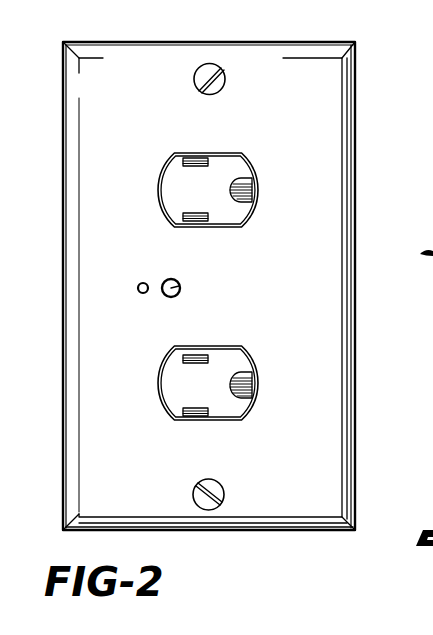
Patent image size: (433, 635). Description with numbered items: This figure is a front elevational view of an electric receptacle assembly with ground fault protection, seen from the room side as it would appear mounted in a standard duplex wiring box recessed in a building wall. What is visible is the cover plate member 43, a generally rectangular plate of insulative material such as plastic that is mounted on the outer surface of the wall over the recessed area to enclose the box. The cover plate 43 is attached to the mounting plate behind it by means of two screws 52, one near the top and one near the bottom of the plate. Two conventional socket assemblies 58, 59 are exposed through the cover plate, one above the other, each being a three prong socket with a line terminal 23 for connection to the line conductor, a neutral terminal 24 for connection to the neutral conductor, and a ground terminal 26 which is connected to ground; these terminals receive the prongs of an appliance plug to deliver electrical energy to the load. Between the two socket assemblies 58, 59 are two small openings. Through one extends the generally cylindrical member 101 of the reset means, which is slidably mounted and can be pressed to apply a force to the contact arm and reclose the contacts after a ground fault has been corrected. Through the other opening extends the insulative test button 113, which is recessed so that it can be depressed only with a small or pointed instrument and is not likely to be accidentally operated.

The cover plate member 43 is at (126, 47).
The screws 52 is at (208, 66).
The socket assembly 58 is at (171, 182).
The socket assembly 59 is at (235, 349).
The line terminal 23 is at (198, 158).
The neutral terminal 24 is at (182, 222).
The ground terminal 26 is at (249, 190).
The test button 113 is at (138, 285).
The cylindrical member 101 is at (179, 283).